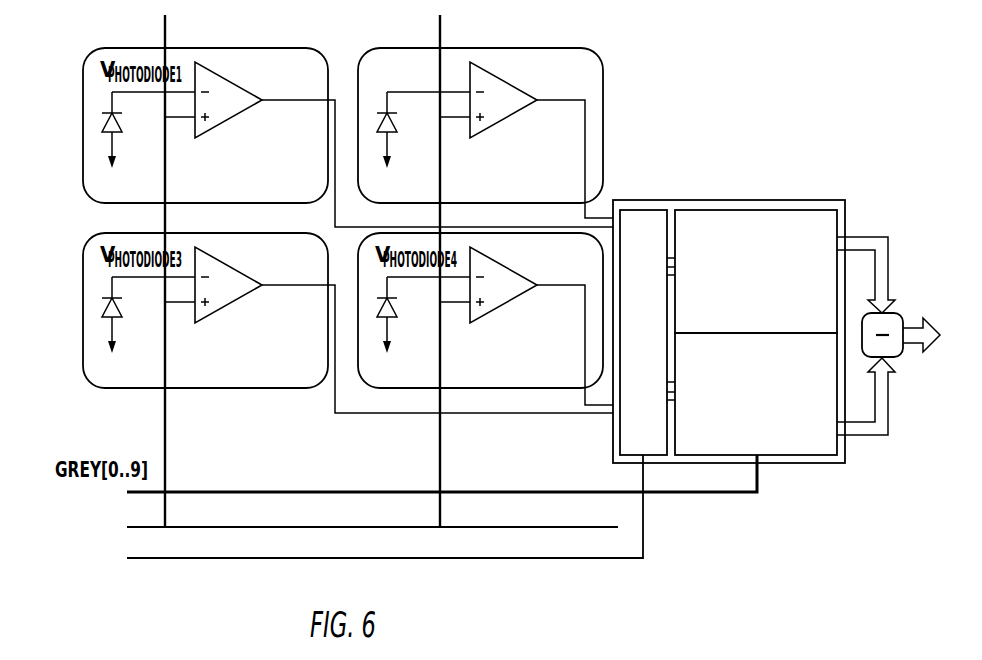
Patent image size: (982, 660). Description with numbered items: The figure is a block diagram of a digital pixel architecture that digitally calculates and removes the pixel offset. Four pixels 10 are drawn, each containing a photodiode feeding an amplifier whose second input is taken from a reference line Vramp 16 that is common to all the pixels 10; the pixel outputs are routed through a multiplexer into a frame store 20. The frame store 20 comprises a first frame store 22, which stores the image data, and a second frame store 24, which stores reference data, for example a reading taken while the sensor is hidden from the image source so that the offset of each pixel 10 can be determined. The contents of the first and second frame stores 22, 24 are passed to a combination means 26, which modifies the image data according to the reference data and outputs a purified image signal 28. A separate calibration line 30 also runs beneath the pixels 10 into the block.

The pixel 10 is at (572, 59).
The reference line Vramp 16 is at (405, 536).
The frame store 20 is at (755, 315).
The first frame store 22 is at (822, 227).
The second frame store 24 is at (825, 439).
The combination means 26 is at (908, 363).
The purified image signal 28 is at (914, 316).
The calibration line 30 is at (560, 566).